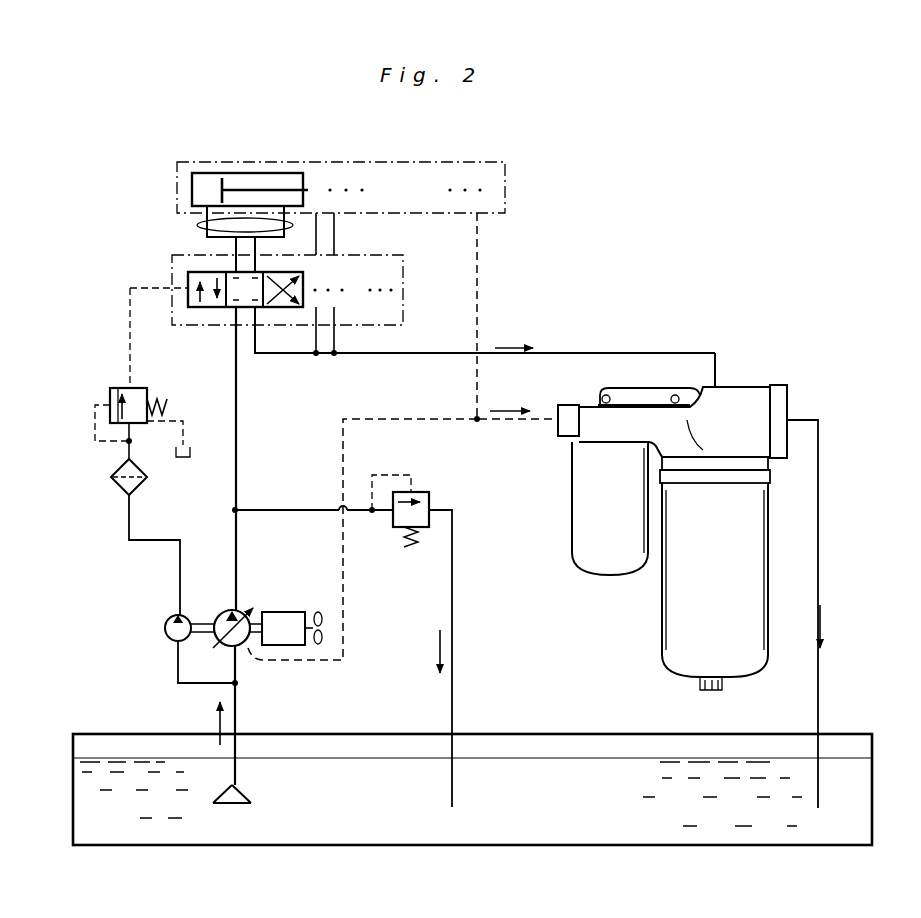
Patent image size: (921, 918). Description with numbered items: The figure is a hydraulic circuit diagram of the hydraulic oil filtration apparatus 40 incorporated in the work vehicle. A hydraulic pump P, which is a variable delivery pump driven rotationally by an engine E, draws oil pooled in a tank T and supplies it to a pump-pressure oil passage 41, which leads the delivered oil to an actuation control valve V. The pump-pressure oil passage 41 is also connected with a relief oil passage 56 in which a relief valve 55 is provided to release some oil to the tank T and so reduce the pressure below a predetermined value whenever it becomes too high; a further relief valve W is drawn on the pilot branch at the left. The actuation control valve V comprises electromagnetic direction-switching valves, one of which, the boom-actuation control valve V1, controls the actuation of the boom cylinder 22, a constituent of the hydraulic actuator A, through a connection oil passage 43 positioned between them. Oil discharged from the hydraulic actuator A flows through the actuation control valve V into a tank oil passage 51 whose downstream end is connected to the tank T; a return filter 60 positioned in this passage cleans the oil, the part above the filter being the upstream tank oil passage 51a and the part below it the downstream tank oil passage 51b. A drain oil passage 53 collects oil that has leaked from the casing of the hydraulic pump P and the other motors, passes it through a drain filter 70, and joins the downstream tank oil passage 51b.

The boom cylinder 22 is at (253, 173).
The hydraulic actuator A is at (508, 170).
The connection oil passage 43 is at (198, 228).
The actuation control valve V is at (404, 283).
The boom-actuation control valve V1 is at (207, 310).
The hydraulic oil filtration apparatus 40 is at (645, 245).
The drain oil passage 53 is at (480, 320).
The tank oil passage 51 is at (598, 353).
The upstream tank oil passage 51a is at (688, 353).
The downstream tank oil passage 51b is at (818, 552).
The drain filter 70 is at (568, 497).
The return filter 60 is at (660, 607).
The relief valve W is at (142, 451).
The pump-pressure oil passage 41 is at (237, 445).
The hydraulic pump P is at (243, 645).
The engine E is at (272, 611).
The relief valve 55 is at (430, 492).
The relief oil passage 56 is at (452, 555).
The tank T is at (875, 823).